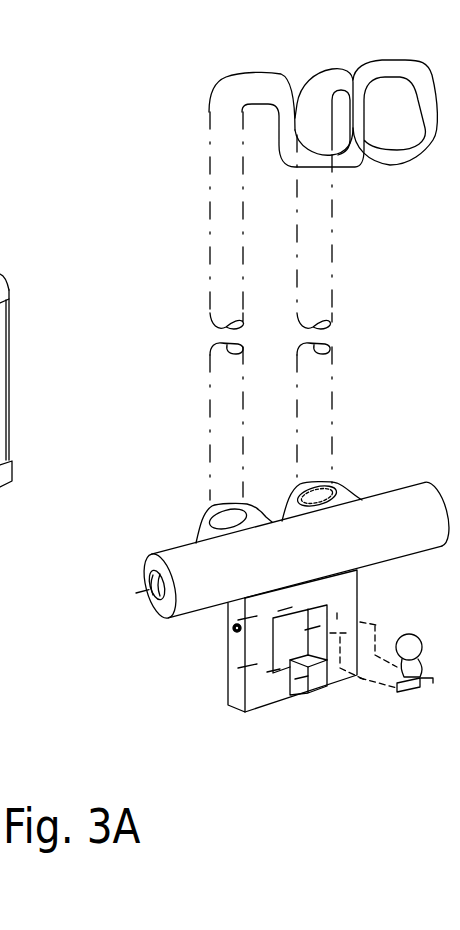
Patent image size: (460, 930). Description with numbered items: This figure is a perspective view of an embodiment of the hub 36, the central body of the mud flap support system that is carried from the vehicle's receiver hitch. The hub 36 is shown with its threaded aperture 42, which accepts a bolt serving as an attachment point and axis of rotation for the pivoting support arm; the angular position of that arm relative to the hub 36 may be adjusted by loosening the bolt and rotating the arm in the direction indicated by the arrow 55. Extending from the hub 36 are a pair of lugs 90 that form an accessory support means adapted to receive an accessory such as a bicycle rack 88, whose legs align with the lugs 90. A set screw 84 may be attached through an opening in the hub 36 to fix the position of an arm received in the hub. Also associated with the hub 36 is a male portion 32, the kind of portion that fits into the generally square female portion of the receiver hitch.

The bicycle rack 88 is at (219, 79).
The threaded aperture 42 is at (150, 560).
The lugs 90 is at (205, 515).
The hub portion 36 is at (230, 702).
The set screw 84 is at (237, 628).
The male portion 32 is at (337, 613).
The arrow 55 is at (0, 562).